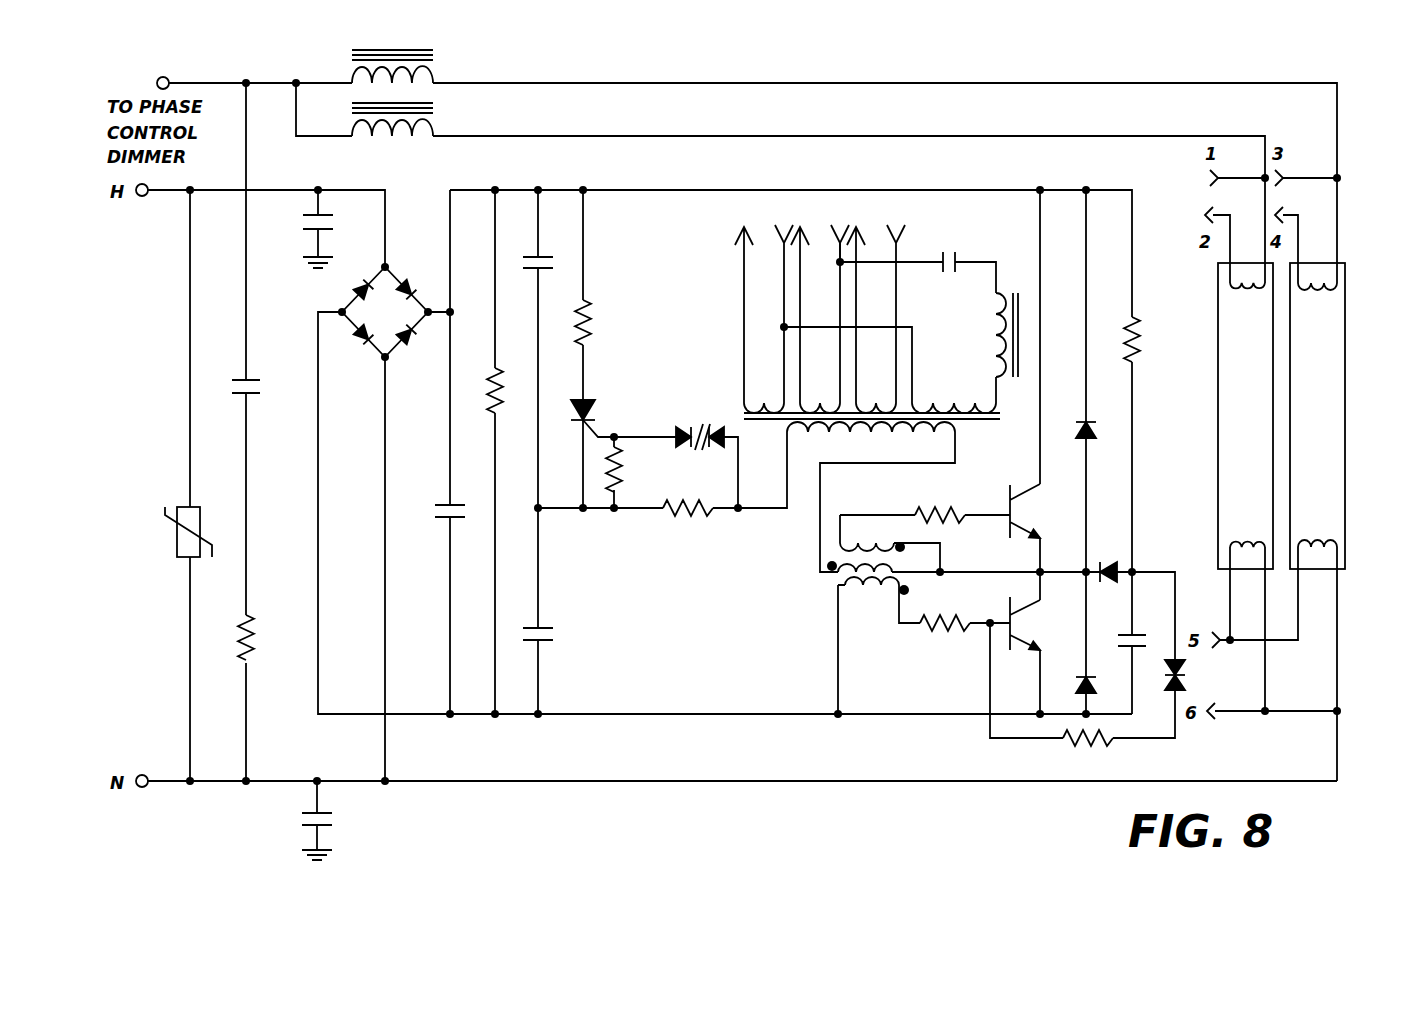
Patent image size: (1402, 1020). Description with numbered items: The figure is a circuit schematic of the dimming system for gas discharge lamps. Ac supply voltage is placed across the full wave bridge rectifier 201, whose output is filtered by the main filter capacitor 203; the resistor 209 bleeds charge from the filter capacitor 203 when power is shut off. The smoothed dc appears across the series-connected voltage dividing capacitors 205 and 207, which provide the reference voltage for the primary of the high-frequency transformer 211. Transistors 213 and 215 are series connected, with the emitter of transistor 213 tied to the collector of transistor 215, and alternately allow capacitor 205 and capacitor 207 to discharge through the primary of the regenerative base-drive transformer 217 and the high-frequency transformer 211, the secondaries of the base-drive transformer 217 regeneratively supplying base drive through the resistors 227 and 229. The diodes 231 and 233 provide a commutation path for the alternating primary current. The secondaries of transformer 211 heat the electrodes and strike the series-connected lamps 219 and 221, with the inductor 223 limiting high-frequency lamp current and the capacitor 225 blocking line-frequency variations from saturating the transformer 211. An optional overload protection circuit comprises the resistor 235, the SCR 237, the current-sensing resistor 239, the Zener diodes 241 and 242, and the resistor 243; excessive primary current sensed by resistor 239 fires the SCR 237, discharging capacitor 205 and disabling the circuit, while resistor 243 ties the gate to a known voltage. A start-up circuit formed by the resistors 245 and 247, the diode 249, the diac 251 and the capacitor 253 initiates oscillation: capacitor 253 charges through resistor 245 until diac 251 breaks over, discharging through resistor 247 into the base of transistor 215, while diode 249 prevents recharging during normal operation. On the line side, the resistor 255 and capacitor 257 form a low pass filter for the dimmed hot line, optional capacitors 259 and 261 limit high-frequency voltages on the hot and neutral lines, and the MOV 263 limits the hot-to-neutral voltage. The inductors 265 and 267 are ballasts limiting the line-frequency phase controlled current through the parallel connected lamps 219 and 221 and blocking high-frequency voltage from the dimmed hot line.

The full wave bridge rectifier 201 is at (408, 277).
The main filter capacitor 203 is at (455, 519).
The voltage dividing capacitor 205 is at (548, 255).
The voltage dividing capacitor 207 is at (548, 642).
The resistor 209 is at (490, 404).
The high-frequency transformer 211 is at (962, 421).
The transistor 213 is at (1008, 501).
The transistor 215 is at (1005, 642).
The regenerative base-drive transformer 217 is at (838, 577).
The gas discharge lamp 219 is at (1218, 362).
The gas discharge lamp 221 is at (1290, 426).
The inductor 223 is at (1003, 347).
The capacitor 225 is at (955, 258).
The resistor 227 is at (920, 514).
The resistor 229 is at (929, 632).
The diode 231 is at (1098, 432).
The diode 233 is at (1079, 684).
The resistor 235 is at (588, 310).
The SCR 237 is at (590, 406).
The current-sensing resistor 239 is at (700, 512).
The Zener diode 241 is at (682, 428).
The Zener diode 242 is at (718, 438).
The resistor 243 is at (612, 488).
The resistor 245 is at (1138, 350).
The resistor 247 is at (1085, 748).
The diode 249 is at (1112, 570).
The diac 251 is at (1185, 672).
The capacitor 253 is at (1126, 629).
The resistor 255 is at (250, 634).
The capacitor 257 is at (250, 396).
The capacitor 259 is at (316, 218).
The capacitor 261 is at (322, 810).
The MOV 263 is at (180, 507).
The inductor 265 is at (437, 70).
The inductor 267 is at (437, 122).